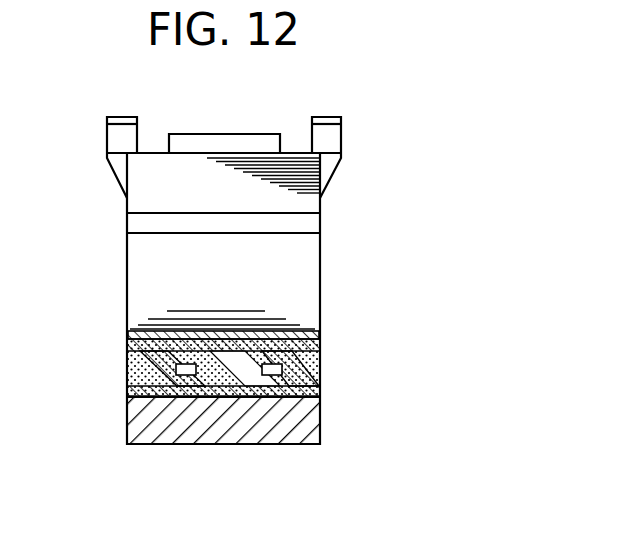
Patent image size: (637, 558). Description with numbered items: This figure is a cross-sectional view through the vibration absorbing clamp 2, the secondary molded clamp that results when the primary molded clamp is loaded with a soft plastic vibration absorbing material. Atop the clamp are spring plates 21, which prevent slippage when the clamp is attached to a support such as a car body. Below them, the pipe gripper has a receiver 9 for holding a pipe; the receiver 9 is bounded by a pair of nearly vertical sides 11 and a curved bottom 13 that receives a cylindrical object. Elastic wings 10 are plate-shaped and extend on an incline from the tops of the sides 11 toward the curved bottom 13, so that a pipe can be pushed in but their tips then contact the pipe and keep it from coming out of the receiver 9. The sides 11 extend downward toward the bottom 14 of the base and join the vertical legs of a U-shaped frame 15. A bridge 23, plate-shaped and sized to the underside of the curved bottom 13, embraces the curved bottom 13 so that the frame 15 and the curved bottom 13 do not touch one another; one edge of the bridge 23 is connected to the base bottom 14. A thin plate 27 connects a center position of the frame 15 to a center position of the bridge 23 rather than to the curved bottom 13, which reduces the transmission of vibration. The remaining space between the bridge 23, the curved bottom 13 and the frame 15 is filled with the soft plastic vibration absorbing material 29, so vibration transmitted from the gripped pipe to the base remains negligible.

The vibration absorbing clamp 2 is at (412, 158).
The spring plates 21 is at (115, 132).
The receiver 9 is at (150, 279).
The elastic wings 10 is at (150, 199).
The sides 11 is at (140, 223).
The curved bottom 13 is at (268, 333).
The bridges 23 is at (307, 346).
The thin plate 27 is at (140, 368).
The vibration absorbing material 29 is at (135, 388).
The U-shaped frame 15 is at (316, 393).
The bottom 14 is at (318, 428).